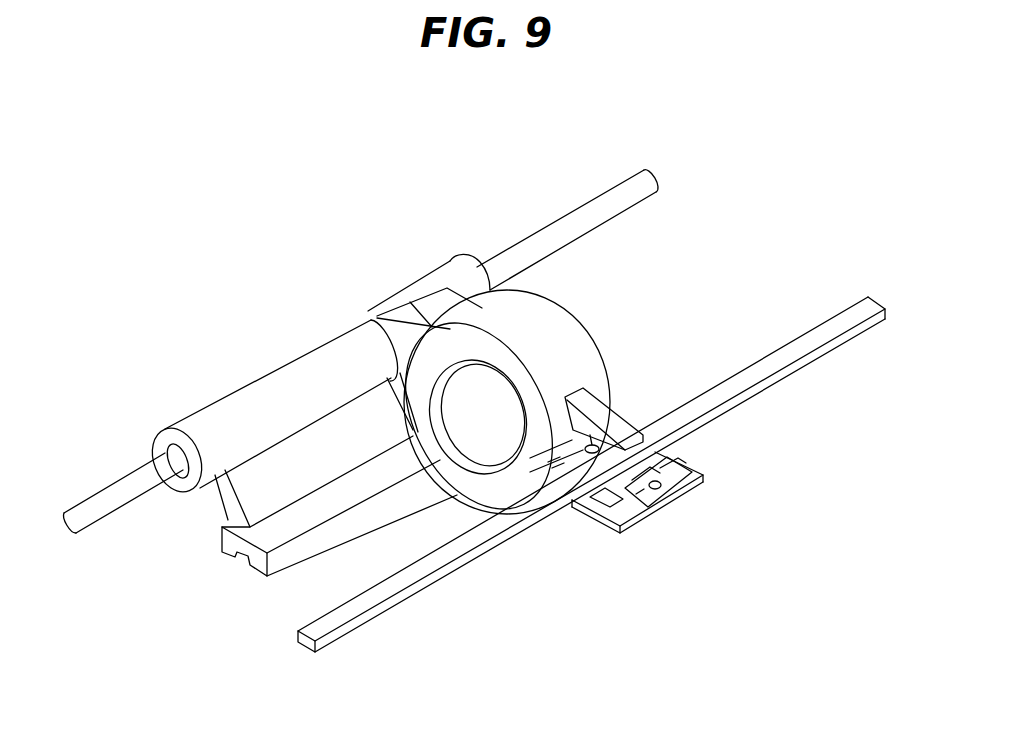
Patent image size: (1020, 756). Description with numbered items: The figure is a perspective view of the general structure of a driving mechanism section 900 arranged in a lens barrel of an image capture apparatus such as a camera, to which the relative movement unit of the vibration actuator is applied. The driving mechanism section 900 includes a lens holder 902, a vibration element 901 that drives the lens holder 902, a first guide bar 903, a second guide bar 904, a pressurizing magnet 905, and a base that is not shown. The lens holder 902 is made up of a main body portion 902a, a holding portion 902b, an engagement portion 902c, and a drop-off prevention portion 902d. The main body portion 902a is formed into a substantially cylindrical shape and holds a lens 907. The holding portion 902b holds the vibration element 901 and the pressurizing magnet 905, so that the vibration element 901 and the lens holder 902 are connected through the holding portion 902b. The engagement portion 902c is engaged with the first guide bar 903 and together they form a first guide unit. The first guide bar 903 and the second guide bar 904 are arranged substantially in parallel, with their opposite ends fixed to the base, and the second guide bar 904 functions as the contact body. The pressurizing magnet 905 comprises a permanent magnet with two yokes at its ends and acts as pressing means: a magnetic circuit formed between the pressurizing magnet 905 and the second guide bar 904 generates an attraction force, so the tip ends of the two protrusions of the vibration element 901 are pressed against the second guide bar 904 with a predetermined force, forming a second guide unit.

The driving mechanism section 900 is at (238, 191).
The vibration element 901 is at (672, 451).
The lens holder 902 is at (590, 337).
The main body portion 902a is at (531, 311).
The holding portion 902b is at (610, 520).
The engagement portion 902c is at (310, 363).
The drop-off prevention portion 902d is at (617, 420).
The first guide bar 903 is at (570, 222).
The second guide bar 904 is at (808, 340).
The pressurizing magnet 905 is at (667, 496).
The lens 907 is at (483, 437).